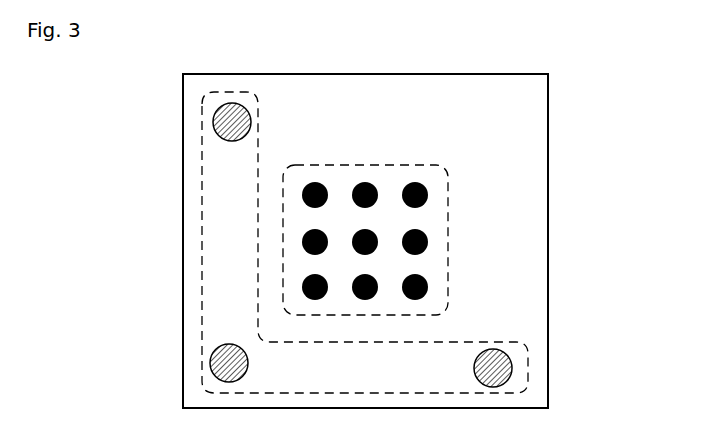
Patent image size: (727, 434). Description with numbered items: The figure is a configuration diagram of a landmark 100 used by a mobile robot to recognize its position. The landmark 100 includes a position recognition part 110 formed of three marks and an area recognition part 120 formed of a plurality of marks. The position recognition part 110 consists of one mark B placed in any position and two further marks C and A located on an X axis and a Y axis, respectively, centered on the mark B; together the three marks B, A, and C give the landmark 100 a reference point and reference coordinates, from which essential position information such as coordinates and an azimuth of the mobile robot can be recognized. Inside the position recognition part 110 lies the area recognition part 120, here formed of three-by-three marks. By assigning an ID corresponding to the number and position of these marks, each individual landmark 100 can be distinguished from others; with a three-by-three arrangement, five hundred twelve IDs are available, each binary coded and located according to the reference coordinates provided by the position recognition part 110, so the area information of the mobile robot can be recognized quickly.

The landmark 100 is at (552, 240).
The position recognition part 110 is at (200, 234).
The area recognition part 120 is at (442, 168).
The mark A is at (213, 120).
The mark B is at (210, 364).
The mark C is at (511, 370).